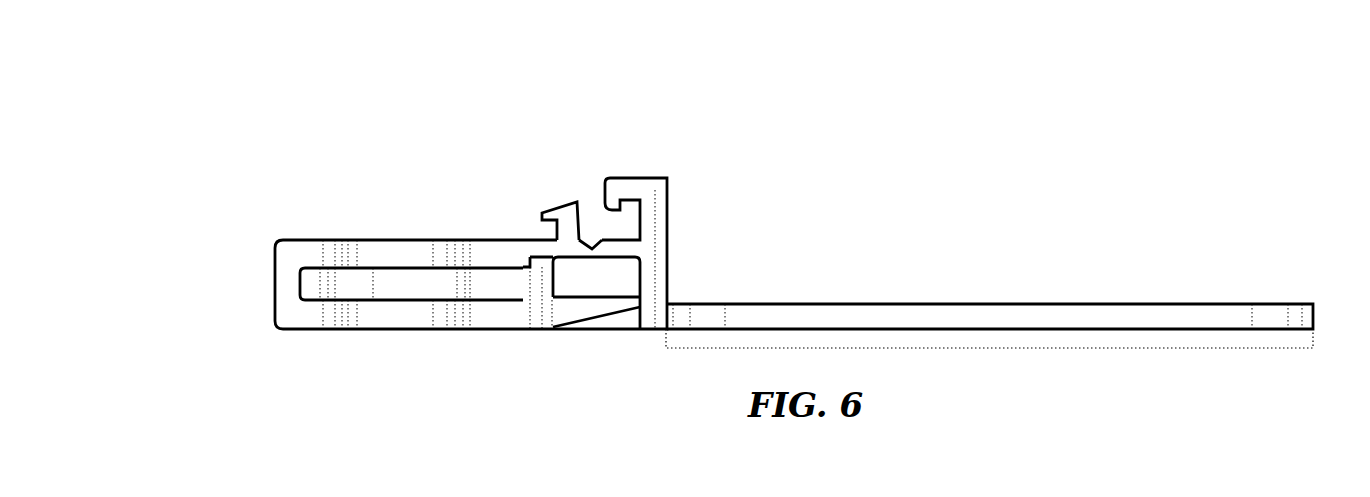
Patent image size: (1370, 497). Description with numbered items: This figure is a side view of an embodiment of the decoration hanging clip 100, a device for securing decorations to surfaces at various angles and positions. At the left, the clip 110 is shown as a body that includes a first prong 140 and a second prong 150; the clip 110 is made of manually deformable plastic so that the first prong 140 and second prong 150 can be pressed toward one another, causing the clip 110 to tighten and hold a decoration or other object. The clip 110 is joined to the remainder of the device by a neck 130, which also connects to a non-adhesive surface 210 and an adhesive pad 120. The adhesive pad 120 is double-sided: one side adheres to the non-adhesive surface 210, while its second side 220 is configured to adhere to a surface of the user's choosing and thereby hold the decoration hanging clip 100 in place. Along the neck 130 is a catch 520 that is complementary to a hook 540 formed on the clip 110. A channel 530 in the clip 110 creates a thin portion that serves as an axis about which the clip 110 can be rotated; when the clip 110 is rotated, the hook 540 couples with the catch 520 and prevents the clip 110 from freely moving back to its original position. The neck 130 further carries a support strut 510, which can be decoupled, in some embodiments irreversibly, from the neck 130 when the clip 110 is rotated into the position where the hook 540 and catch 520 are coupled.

The decoration hanging clip 100 is at (255, 138).
The clip 110 is at (387, 397).
The adhesive pad 120 is at (770, 218).
The neck 130 is at (610, 115).
The first prong 140 is at (397, 283).
The second prong 150 is at (488, 315).
The non-adhesive surface 210 is at (1013, 293).
The second side of the adhesive pad 220 is at (1083, 350).
The support strut 510 is at (587, 333).
The catch 520 is at (622, 162).
The channel 530 is at (595, 232).
The hook 540 is at (557, 192).